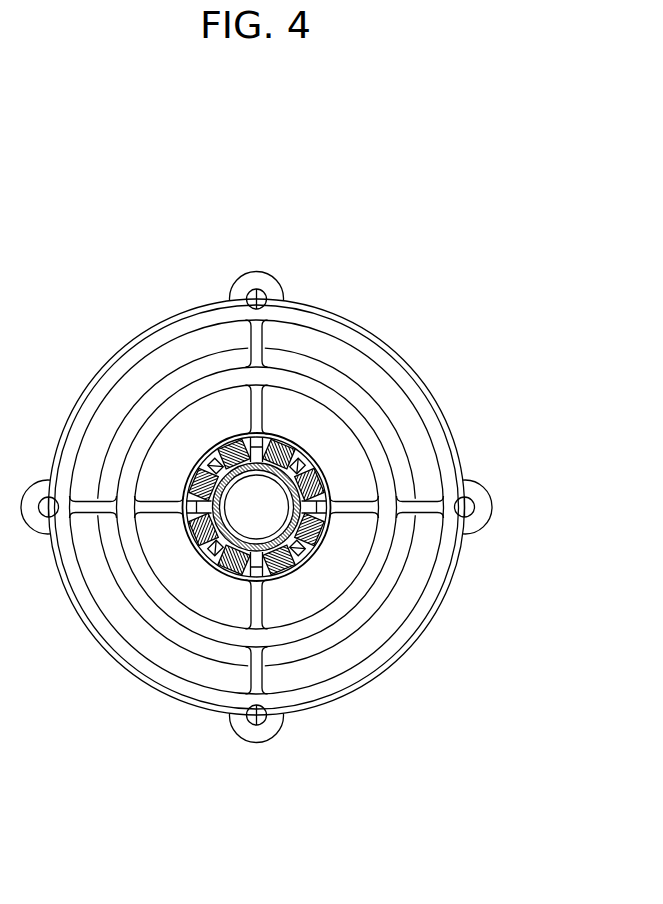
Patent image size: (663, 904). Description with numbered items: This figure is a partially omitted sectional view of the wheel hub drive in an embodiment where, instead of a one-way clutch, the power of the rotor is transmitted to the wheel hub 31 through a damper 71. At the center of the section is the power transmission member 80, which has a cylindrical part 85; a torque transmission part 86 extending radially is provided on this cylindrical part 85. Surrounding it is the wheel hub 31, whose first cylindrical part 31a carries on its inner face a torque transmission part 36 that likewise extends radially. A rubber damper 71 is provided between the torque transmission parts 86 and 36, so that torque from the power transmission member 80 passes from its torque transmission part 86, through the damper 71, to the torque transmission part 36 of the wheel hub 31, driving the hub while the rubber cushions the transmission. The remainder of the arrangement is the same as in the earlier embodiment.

The wheel hub 31 is at (277, 408).
The first cylindrical part 31a is at (228, 450).
The torque transmission part 36 is at (265, 441).
The torque transmission part 86 is at (303, 459).
The cylindrical part 85 is at (325, 485).
The power transmission member 80 is at (325, 535).
The damper 71 is at (285, 578).